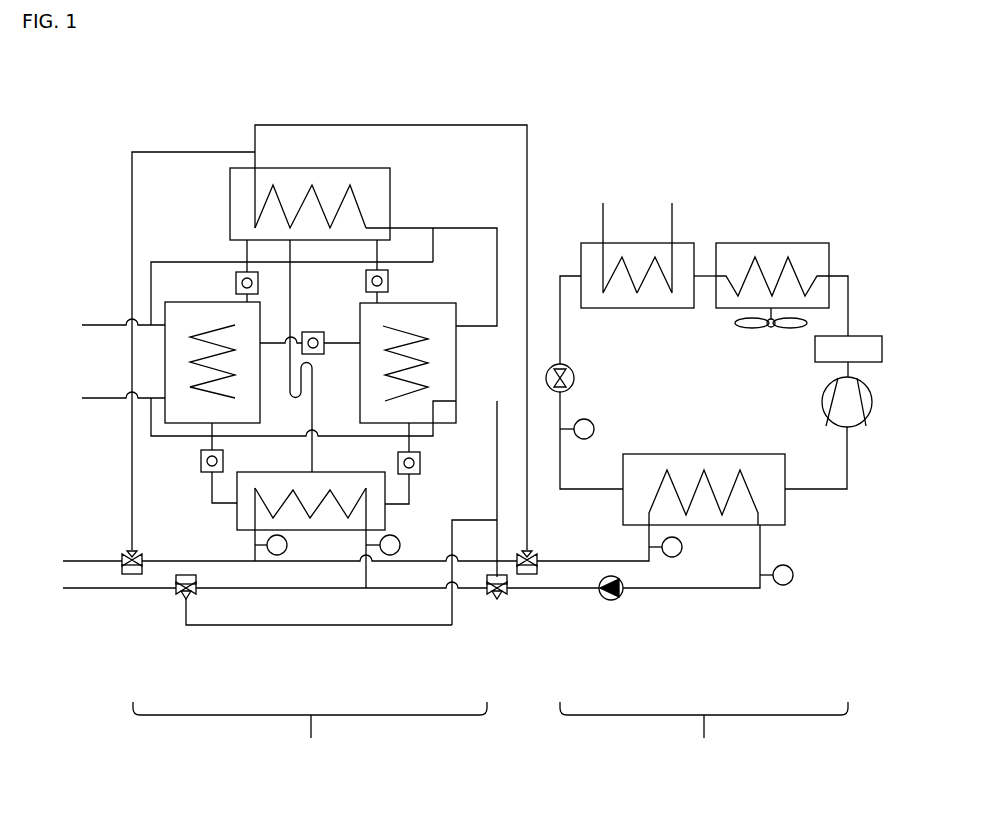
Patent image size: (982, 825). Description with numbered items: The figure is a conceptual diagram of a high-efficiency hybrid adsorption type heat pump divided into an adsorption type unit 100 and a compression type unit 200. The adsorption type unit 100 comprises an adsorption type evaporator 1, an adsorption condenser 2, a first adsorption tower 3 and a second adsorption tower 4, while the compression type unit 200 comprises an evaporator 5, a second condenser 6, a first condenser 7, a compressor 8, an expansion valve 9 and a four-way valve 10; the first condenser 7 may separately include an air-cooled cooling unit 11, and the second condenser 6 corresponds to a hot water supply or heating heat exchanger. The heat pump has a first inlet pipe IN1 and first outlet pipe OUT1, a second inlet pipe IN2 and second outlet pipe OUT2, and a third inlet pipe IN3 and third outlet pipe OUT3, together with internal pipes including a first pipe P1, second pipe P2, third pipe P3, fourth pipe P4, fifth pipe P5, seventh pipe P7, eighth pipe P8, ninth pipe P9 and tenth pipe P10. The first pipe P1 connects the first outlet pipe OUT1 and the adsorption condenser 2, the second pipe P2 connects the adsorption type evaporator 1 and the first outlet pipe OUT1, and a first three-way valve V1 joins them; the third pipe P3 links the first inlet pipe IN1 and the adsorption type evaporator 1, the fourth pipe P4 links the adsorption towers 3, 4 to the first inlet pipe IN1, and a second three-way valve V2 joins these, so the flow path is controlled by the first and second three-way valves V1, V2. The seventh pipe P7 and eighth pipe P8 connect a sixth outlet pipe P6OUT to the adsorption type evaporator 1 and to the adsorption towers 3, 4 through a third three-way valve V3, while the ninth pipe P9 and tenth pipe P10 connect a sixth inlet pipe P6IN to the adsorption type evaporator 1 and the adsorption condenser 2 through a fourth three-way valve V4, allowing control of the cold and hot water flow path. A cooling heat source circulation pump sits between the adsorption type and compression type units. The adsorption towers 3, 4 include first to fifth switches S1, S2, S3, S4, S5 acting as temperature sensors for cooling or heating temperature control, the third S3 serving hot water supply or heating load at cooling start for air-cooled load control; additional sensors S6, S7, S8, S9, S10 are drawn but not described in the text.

The adsorption type evaporator 1 is at (307, 493).
The adsorption condenser 2 is at (322, 187).
The first adsorption tower 3 is at (175, 325).
The second adsorption tower 4 is at (370, 325).
The evaporator 5 is at (638, 486).
The second condenser 6 is at (632, 265).
The first condenser 7 is at (767, 265).
The compressor 8 is at (842, 410).
The expansion valve 9 is at (576, 376).
The four-way valve 10 is at (840, 358).
The air-cooled cooling unit 11 is at (840, 317).
The adsorption type unit 100 is at (310, 736).
The compression type unit 200 is at (704, 736).
The first pipe P1 is at (146, 150).
The second pipe P2 is at (215, 566).
The third pipe P3 is at (271, 592).
The fourth pipe P4 is at (200, 632).
The fifth pipe P5 is at (417, 223).
The seventh pipe P7 is at (395, 592).
The eighth pipe P8 is at (494, 500).
The ninth pipe P9 is at (343, 568).
The tenth pipe P10 is at (447, 119).
The sixth inlet pipe P6IN is at (639, 571).
The sixth outlet pipe P6OUT is at (724, 598).
The first three-way valve V1 is at (149, 556).
The second three-way valve V2 is at (173, 594).
The third three-way valve V3 is at (519, 596).
The fourth three-way valve V4 is at (546, 554).
The first switch S1 is at (233, 461).
The second switch S2 is at (424, 463).
The third switch S3 is at (262, 283).
The fourth switch S4 is at (392, 281).
The fifth switch S5 is at (321, 333).
The temperature sensor S6 is at (665, 547).
The temperature sensor S7 is at (271, 545).
The temperature sensor S8 is at (383, 545).
The temperature sensor S9 is at (577, 429).
The temperature sensor S10 is at (776, 575).
The first inlet pipe IN1 is at (398, 574).
The first outlet pipe OUT1 is at (343, 543).
The second inlet pipe IN2 is at (105, 398).
The second outlet pipe OUT2 is at (100, 325).
The third inlet pipe IN3 is at (614, 233).
The third outlet pipe OUT3 is at (664, 233).